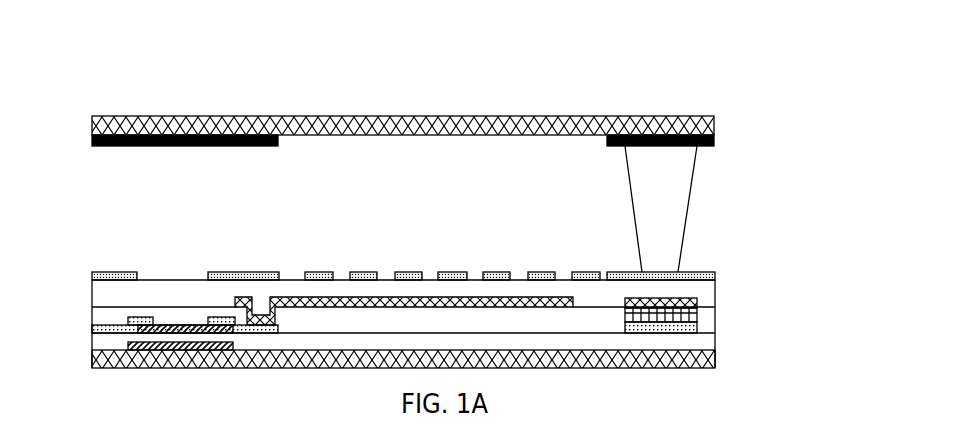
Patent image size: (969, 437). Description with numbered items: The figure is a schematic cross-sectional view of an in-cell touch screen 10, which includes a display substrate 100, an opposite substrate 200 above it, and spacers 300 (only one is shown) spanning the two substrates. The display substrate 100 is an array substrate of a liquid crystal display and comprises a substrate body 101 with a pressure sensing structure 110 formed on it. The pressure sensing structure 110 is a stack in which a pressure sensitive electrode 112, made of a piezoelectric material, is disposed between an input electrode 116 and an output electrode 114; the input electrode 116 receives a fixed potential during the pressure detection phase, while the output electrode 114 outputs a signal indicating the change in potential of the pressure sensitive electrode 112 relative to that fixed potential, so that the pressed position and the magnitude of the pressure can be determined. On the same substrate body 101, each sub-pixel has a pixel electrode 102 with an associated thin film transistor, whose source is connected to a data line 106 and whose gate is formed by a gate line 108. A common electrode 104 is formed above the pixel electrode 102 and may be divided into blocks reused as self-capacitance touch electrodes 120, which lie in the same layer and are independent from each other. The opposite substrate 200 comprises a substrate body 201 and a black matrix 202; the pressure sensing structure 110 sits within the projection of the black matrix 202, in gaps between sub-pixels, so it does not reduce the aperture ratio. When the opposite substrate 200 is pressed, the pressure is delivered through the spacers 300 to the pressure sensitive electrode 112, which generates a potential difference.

The in-cell touch screen 10 is at (493, 98).
The display substrate 100 is at (447, 296).
The substrate body 101 is at (715, 360).
The pixel electrode 102 is at (422, 300).
The common electrode 104 is at (500, 272).
The data line 106 is at (100, 329).
The gate line 108 is at (128, 344).
The pressure sensing structure 110 is at (718, 316).
The pressure sensitive electrode 112 is at (697, 315).
The output electrode 114 is at (697, 329).
The input electrode 116 is at (697, 302).
The touch electrodes 120 is at (438, 254).
The opposite substrate 200 is at (462, 131).
The substrate body 201 is at (714, 122).
The black matrix 202 is at (714, 139).
The spacer 300 is at (700, 196).